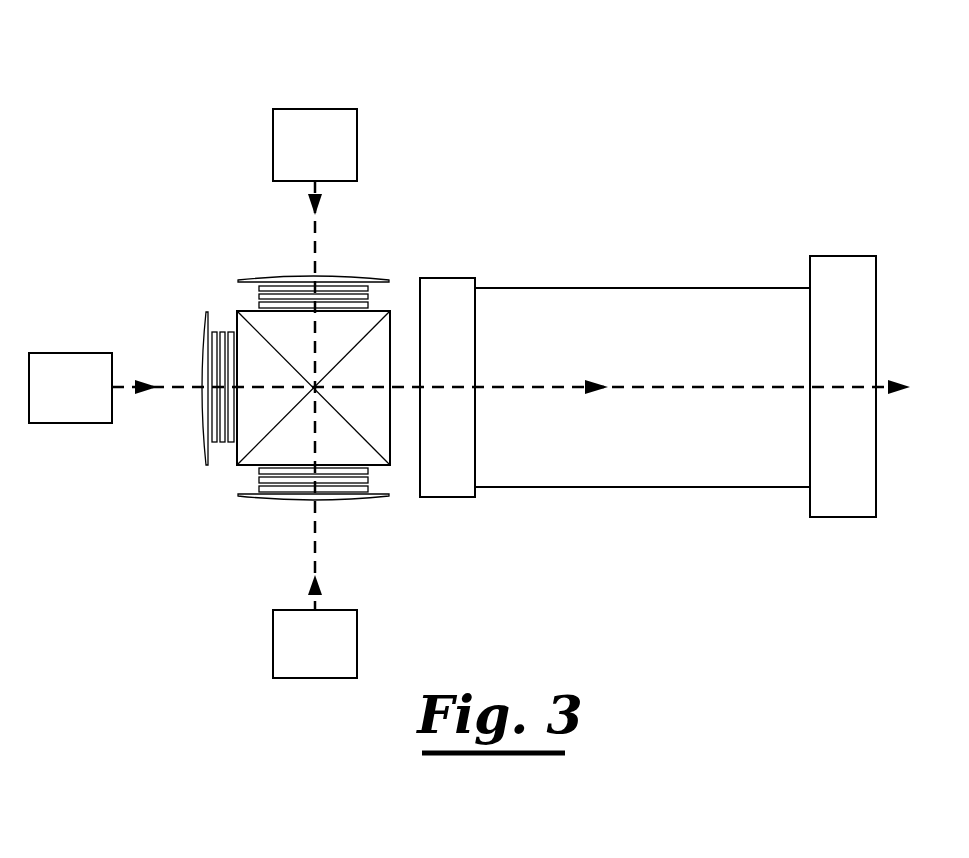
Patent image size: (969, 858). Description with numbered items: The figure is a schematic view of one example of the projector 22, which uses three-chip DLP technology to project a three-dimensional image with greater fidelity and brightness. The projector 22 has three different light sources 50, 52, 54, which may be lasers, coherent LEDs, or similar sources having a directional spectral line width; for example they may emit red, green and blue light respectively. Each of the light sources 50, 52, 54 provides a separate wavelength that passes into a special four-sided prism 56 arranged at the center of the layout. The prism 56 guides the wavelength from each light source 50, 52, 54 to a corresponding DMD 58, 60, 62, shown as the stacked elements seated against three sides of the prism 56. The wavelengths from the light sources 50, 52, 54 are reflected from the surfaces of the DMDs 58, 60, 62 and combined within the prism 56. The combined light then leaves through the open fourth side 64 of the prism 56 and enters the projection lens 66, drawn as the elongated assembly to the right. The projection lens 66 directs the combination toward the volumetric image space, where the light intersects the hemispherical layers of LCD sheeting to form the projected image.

The projector 22 is at (114, 188).
The light source 50 is at (318, 109).
The light source 52 is at (60, 423).
The light source 54 is at (312, 678).
The four-sided prism 56 is at (243, 318).
The DMD 58 is at (272, 276).
The DMD 60 is at (202, 432).
The DMD 62 is at (333, 503).
The open fourth side 64 is at (392, 437).
The projection lens 66 is at (595, 288).